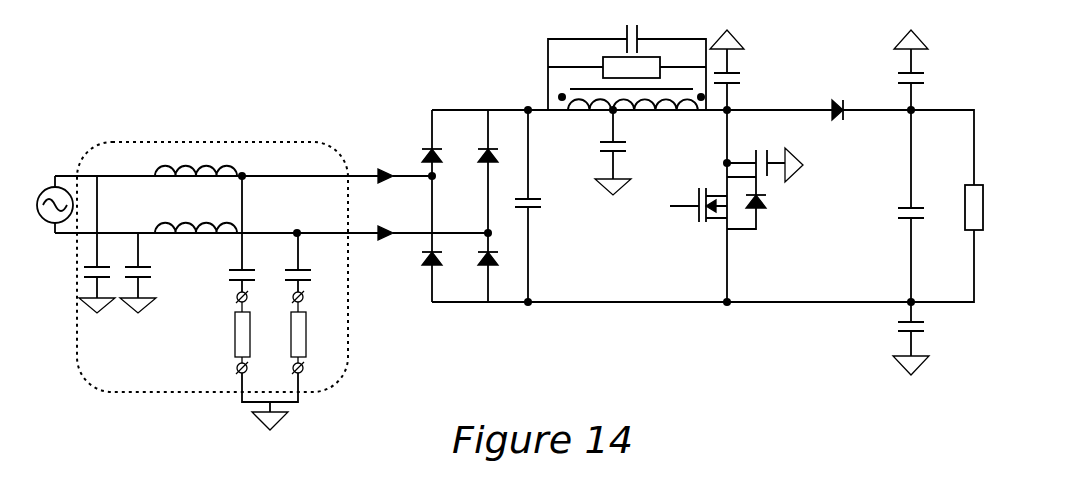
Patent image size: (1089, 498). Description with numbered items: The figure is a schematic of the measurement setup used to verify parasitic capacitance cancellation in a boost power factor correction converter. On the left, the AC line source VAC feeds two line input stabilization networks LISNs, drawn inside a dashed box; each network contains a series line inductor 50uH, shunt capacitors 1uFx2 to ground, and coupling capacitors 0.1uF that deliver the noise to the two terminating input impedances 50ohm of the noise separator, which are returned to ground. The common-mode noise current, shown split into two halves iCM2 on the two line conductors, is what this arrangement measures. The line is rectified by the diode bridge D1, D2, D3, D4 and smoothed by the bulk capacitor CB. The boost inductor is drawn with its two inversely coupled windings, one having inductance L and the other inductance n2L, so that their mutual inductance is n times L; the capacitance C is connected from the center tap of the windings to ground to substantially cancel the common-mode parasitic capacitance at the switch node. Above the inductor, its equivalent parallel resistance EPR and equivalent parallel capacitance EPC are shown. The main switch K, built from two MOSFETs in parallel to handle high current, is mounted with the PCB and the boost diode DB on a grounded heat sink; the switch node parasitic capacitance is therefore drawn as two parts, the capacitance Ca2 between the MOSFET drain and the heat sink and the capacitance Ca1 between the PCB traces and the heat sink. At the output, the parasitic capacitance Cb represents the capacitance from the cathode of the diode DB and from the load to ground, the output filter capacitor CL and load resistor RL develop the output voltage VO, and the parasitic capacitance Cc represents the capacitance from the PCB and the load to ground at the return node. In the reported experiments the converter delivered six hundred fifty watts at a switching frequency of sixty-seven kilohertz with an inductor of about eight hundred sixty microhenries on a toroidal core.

The AC input voltage source VAC is at (45, 185).
The line input stabilization networks LISNs is at (212, 267).
The LISN 50 µH inductors 50uH is at (196, 217).
The LISN 1 µF capacitors 1uFx2 is at (117, 259).
The LISN 0.1 µF capacitors 0.1uF is at (266, 245).
The input impedances of noise separator 50ohm is at (273, 360).
The common-mode current halves iCM2 is at (378, 208).
The rectifier diode D1 is at (435, 119).
The rectifier diode D2 is at (492, 119).
The rectifier diode D3 is at (427, 296).
The rectifier diode D4 is at (491, 296).
The bulk capacitor CB is at (540, 206).
The equivalent parallel resistance of inductor EPR is at (596, 73).
The equivalent parallel capacitance of inductor EPC is at (657, 32).
The winding inductance L is at (579, 124).
The second winding inductance n2L is at (655, 127).
The capacitance C is at (602, 152).
The parasitic capacitance Ca1 is at (745, 70).
The parasitic capacitance Ca2 is at (765, 152).
The main switch K is at (718, 226).
The diode DB is at (834, 97).
The parasitic capacitance Cb is at (928, 70).
The load capacitor CL is at (896, 206).
The parasitic capacitance Cc is at (924, 338).
The load resistor RL is at (994, 209).
The output voltage VO is at (1008, 126).